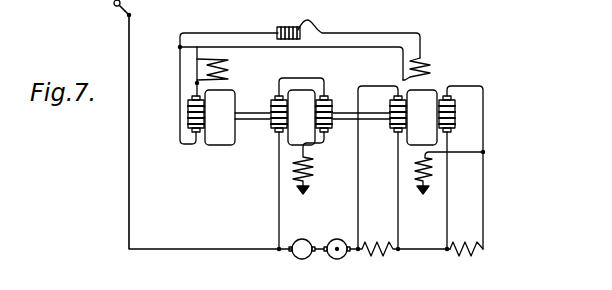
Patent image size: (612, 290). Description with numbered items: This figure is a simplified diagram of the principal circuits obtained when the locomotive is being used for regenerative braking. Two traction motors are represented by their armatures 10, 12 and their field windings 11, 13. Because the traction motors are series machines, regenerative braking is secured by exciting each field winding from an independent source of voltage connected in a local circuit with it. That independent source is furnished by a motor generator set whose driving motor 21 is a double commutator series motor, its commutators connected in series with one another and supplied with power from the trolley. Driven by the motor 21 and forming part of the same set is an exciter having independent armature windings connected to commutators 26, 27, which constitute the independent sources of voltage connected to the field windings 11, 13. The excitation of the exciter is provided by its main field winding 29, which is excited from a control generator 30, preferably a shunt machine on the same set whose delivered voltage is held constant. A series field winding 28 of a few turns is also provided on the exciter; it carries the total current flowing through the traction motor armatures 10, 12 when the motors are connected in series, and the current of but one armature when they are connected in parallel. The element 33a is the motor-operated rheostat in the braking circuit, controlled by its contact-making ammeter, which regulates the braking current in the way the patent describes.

The armature 10 is at (297, 258).
The field winding 11 is at (375, 262).
The armature 12 is at (334, 259).
The field winding 13 is at (458, 262).
The motor 21 is at (301, 163).
The commutator 26 is at (392, 129).
The commutator 27 is at (452, 125).
The series field winding 28 is at (433, 168).
The main field winding 29 is at (432, 69).
The control generator 30 is at (211, 117).
The thermostatic element 33a is at (282, 25).